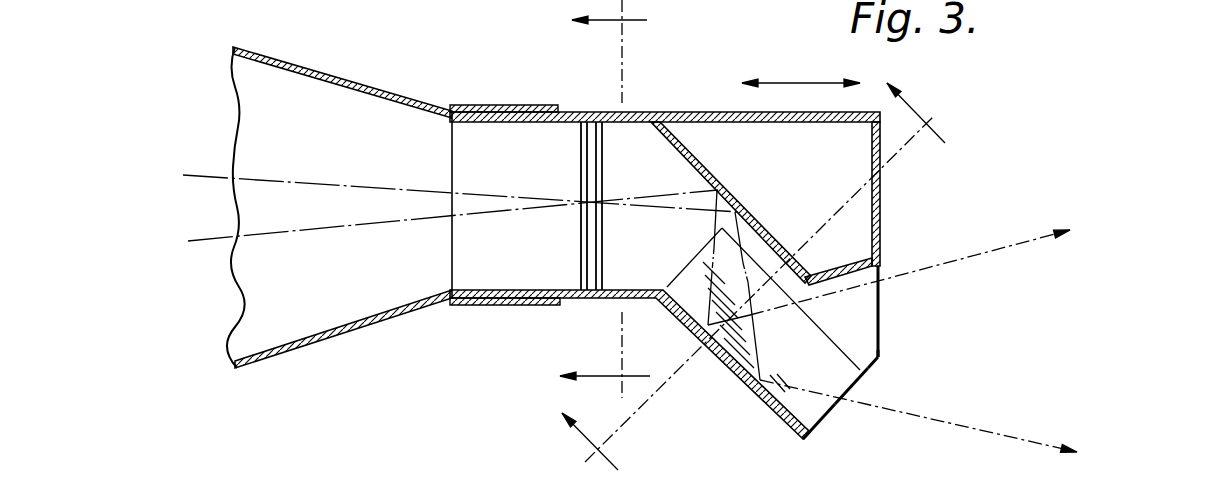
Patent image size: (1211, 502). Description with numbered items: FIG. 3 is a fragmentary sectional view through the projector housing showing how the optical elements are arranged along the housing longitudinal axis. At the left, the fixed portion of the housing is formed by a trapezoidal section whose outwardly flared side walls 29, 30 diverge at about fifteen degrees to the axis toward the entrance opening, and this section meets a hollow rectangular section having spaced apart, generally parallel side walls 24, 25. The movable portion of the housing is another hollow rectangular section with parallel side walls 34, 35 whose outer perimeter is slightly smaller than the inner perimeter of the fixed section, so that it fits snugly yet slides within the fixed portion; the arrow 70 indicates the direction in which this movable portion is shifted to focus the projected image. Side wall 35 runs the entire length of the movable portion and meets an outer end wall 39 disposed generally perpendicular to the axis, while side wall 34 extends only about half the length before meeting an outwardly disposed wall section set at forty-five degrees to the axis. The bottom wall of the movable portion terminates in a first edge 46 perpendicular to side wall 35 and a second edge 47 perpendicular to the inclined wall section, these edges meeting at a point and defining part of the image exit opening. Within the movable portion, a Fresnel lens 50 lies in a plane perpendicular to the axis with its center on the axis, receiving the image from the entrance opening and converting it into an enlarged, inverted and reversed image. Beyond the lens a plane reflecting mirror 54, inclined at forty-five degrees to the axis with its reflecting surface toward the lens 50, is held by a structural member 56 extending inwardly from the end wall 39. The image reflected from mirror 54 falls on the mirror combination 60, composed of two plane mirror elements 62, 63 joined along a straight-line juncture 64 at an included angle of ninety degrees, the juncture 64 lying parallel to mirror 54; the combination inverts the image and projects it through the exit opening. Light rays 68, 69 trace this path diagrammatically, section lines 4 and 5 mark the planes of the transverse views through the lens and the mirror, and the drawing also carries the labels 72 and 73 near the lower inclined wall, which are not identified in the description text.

The section line 4- 4 is at (605, 199).
The section line 5- 5 is at (762, 286).
The side wall 24 is at (462, 305).
The side wall 25 is at (504, 104).
The outwardly flared side wall 29 is at (367, 84).
The outwardly flared side wall 30 is at (346, 333).
The side wall 34 is at (603, 300).
The side wall 35 is at (694, 111).
The outer end wall 39 is at (882, 190).
The first edge of bottom wall 46 is at (879, 300).
The second edge of bottom wall 47 is at (879, 364).
The lens 50 is at (581, 150).
The plane reflecting mirror 54 is at (698, 169).
The structural member 56 is at (860, 264).
The mirror combination 60 is at (799, 338).
The plane reflecting mirror element 62 is at (730, 373).
The plane reflecting mirror element 63 is at (833, 382).
The juncture 64 is at (818, 418).
The light ray 68 is at (205, 175).
The light ray 69 is at (200, 242).
The arrow 70 is at (868, 262).
The prism edge 72 is at (757, 406).
The wall end 73 is at (806, 440).